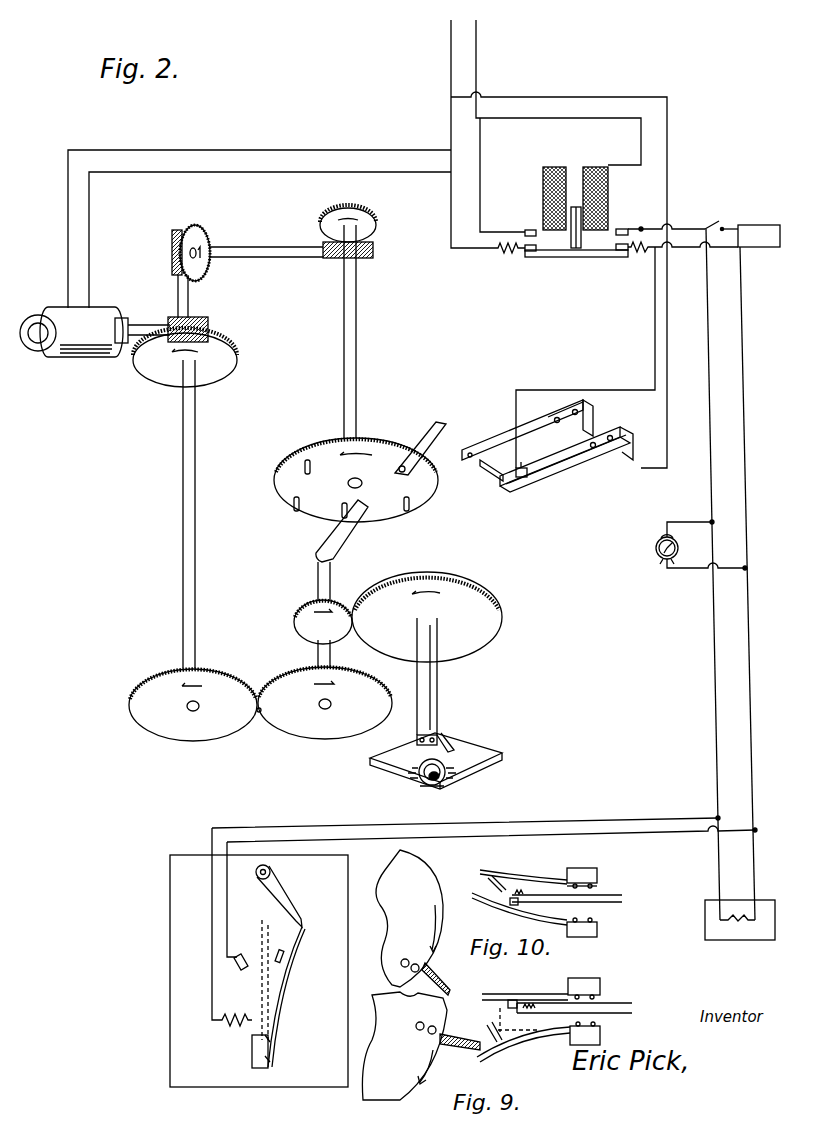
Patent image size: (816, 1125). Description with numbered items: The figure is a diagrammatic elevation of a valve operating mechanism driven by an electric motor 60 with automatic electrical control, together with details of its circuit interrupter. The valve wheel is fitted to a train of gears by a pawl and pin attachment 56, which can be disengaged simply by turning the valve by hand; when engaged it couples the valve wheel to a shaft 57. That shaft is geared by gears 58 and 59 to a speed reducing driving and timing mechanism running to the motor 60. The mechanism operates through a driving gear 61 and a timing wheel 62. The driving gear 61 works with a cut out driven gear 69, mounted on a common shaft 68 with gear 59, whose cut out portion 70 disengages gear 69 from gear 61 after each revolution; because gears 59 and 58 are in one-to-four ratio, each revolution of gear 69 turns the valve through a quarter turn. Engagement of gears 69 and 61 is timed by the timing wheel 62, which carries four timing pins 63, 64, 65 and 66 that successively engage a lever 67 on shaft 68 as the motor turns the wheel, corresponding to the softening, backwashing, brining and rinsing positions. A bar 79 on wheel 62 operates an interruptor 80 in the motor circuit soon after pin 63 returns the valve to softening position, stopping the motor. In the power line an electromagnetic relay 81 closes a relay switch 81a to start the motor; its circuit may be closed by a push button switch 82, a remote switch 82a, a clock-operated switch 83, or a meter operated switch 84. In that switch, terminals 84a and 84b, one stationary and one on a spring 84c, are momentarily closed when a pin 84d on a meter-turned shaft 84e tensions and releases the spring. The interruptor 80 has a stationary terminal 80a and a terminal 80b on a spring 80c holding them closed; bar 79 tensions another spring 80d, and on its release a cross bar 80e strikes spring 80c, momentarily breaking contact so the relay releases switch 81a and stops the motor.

In FIG. 2, the pawl and pin attachment 56 is at (470, 775).
In FIG. 2, the shaft 57 is at (437, 683).
In FIG. 2, the gear 58 is at (460, 569).
In FIG. 2, the gear 59 is at (294, 620).
In FIG. 2, the electric motor 60 is at (80, 357).
In FIG. 2, the driving gear 61 is at (238, 678).
In FIG. 2, the timing wheel 62 is at (406, 445).
In FIG. 10, the timing wheel 62 is at (409, 918).
In FIG. 9, the timing wheel 62 is at (404, 1046).
In FIG. 2, the timing pin 63 is at (410, 510).
In FIG. 2, the timing pin 64 is at (342, 516).
In FIG. 2, the timing pin 65 is at (292, 511).
In FIG. 2, the timing pin 66 is at (304, 462).
In FIG. 2, the lever 67 is at (353, 540).
In FIG. 2, the shaft 68 is at (318, 655).
In FIG. 2, the cut out driven gear 69 is at (314, 732).
In FIG. 2, the cut out portion 70 is at (261, 717).
In FIG. 2, the bar 79 is at (441, 428).
In FIG. 10, the bar 79 is at (448, 980).
In FIG. 9, the bar 79 is at (452, 1050).
In FIG. 2, the interruptor 80 is at (547, 452).
In FIG. 2, the stationary terminal 80a is at (522, 468).
In FIG. 10, the stationary terminal 80a is at (510, 905).
In FIG. 9, the stationary terminal 80a is at (508, 1006).
In FIG. 2, the terminal 80b is at (560, 476).
In FIG. 10, the terminal 80b is at (525, 876).
In FIG. 9, the terminal 80b is at (515, 994).
In FIG. 2, the spring 80c is at (575, 470).
In FIG. 10, the spring 80c is at (560, 878).
In FIG. 9, the spring 80c is at (565, 992).
In FIG. 2, the spring 80d is at (495, 435).
In FIG. 10, the spring 80d is at (500, 905).
In FIG. 9, the spring 80d is at (535, 1040).
In FIG. 2, the cross bar 80e is at (490, 470).
In FIG. 10, the cross bar 80e is at (490, 880).
In FIG. 9, the cross bar 80e is at (495, 1045).
In FIG. 2, the electromagnetic relay 81 is at (608, 193).
In FIG. 2, the relay switch 81a is at (560, 257).
In FIG. 2, the push button switch 82 is at (714, 224).
In FIG. 2, the remote switch 82a is at (705, 918).
In FIG. 2, the clock-operated switch 83 is at (689, 545).
In FIG. 2, the meter operated switch 84 is at (175, 950).
In FIG. 2, the terminal 84a is at (283, 958).
In FIG. 2, the terminal 84b is at (244, 968).
In FIG. 2, the spring 84c is at (289, 993).
In FIG. 2, the pin 84d is at (310, 898).
In FIG. 2, the shaft 84e is at (272, 870).